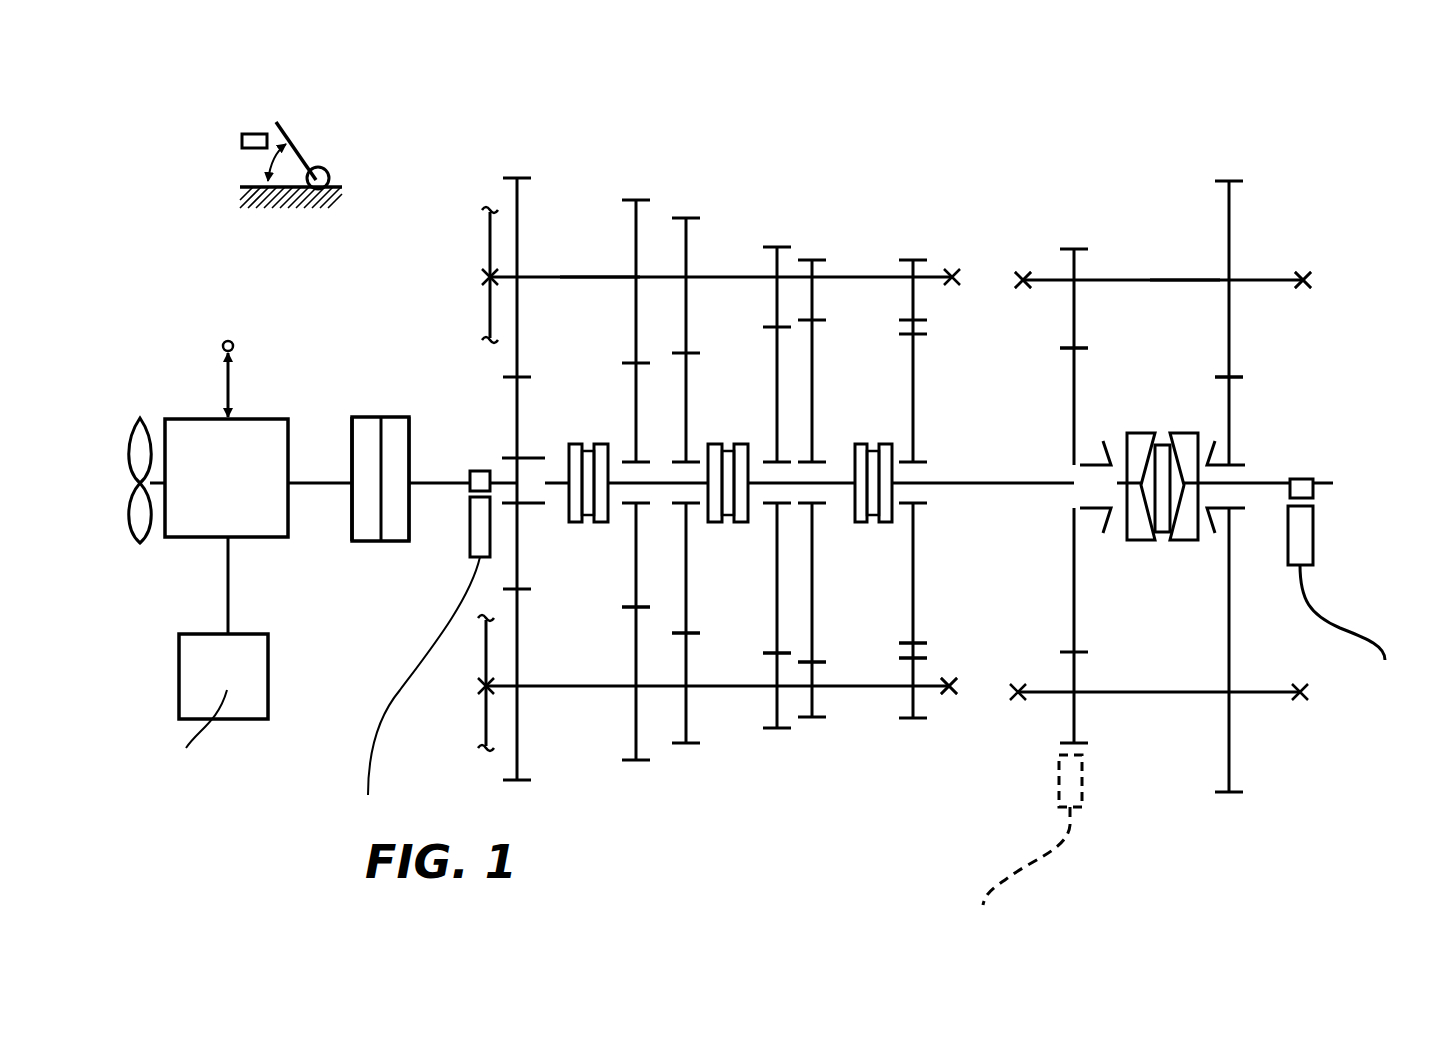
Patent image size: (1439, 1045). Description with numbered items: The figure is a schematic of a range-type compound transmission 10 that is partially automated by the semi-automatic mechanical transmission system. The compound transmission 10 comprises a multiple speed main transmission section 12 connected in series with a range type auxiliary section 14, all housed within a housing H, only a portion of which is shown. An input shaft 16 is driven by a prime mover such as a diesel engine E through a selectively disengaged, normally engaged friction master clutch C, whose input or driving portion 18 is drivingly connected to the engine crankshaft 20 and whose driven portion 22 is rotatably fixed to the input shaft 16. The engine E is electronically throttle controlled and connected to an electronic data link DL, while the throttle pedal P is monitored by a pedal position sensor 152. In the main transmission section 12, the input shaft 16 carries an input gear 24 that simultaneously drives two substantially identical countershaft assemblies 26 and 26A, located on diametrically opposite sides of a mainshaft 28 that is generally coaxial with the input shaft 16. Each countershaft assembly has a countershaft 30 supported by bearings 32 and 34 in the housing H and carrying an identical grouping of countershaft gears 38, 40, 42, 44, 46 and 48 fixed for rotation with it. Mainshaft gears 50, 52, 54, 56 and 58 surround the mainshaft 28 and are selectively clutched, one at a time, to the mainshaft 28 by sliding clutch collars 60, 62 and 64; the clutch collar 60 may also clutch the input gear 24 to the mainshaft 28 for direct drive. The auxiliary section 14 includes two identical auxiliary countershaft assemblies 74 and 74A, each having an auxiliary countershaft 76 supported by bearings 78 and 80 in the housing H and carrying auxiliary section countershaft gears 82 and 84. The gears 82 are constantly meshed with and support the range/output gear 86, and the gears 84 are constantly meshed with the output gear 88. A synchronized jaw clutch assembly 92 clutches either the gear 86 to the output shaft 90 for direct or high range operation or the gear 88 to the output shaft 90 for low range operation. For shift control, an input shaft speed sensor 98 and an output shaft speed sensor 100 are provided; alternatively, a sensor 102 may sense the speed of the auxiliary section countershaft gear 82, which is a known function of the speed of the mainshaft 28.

The range-type compound transmission 10 is at (958, 207).
The main transmission section 12 is at (715, 241).
The range type auxiliary section 14 is at (1148, 159).
The input shaft 16 is at (460, 478).
The input or driving portion 18 is at (364, 530).
The engine crankshaft 20 is at (328, 482).
The driven portion 22 is at (397, 530).
The input gear 24 is at (518, 388).
The countershaft assembly 26 is at (570, 268).
The countershaft assembly 26A is at (603, 690).
The mainshaft 28 is at (1018, 487).
The countershaft 30 is at (610, 279).
The bearing 32 is at (484, 686).
The bearing 34 is at (950, 690).
The countershaft gear 38 is at (517, 735).
The countershaft gear 40 is at (630, 720).
The countershaft gear 42 is at (684, 715).
The countershaft gear 44 is at (770, 705).
The countershaft gear 46 is at (813, 700).
The countershaft gear 48 is at (905, 708).
The mainshaft gear 50 is at (636, 578).
The mainshaft gear 52 is at (687, 582).
The mainshaft gear 54 is at (777, 600).
The mainshaft gear 56 is at (813, 592).
The mainshaft gear 58 is at (912, 582).
The sliding clutch collar 60 is at (568, 496).
The sliding clutch collar 62 is at (707, 458).
The sliding clutch collar 64 is at (855, 455).
The auxiliary countershaft assembly 74 is at (1122, 277).
The auxiliary countershaft assembly 74A is at (1180, 698).
The auxiliary countershaft 76 is at (1195, 283).
The bearing 78 is at (1023, 290).
The bearing 80 is at (1306, 275).
The auxiliary section countershaft gear 82 is at (1078, 268).
The auxiliary section countershaft gear 84 is at (1232, 225).
The range/output gear 86 is at (1074, 415).
The output gear 88 is at (1229, 408).
The output shaft 90 is at (1263, 482).
The two-position synchronized jaw clutch assembly 92 is at (1141, 544).
The input shaft speed sensor 98 is at (465, 528).
The output shaft speed sensor 100 is at (1313, 533).
The sensor 102 is at (1060, 780).
The throttle pedal position sensor 152 is at (250, 138).
The throttle pedal P is at (304, 135).
The diesel engine E is at (194, 612).
The friction master clutch C is at (384, 414).
The electronic data link DL is at (226, 382).
The housing H is at (488, 250).